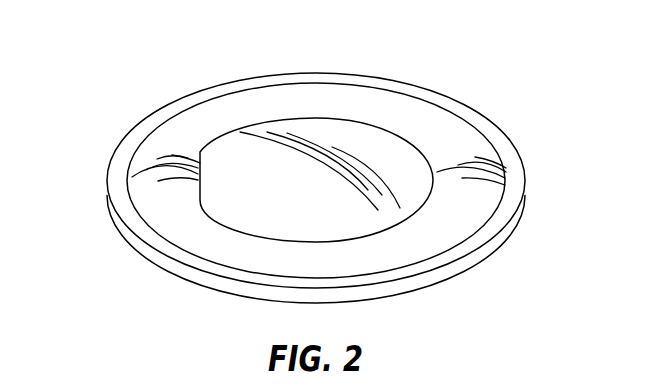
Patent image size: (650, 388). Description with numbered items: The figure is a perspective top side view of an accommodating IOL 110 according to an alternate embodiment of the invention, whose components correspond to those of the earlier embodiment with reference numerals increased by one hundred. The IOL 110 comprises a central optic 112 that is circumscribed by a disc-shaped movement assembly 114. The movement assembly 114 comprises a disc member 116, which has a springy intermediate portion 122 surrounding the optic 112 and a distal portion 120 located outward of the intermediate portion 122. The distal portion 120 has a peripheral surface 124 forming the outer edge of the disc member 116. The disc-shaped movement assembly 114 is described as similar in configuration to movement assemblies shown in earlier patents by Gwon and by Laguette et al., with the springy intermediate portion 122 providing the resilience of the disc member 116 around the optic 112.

The accommodating IOL 110 is at (325, 191).
The optic 112 is at (360, 133).
The movement assembly 114 is at (344, 274).
The disc member 116 is at (157, 219).
The distal portion 120 is at (511, 172).
The springy intermediate portion 122 is at (290, 258).
The peripheral surface 124 is at (493, 247).